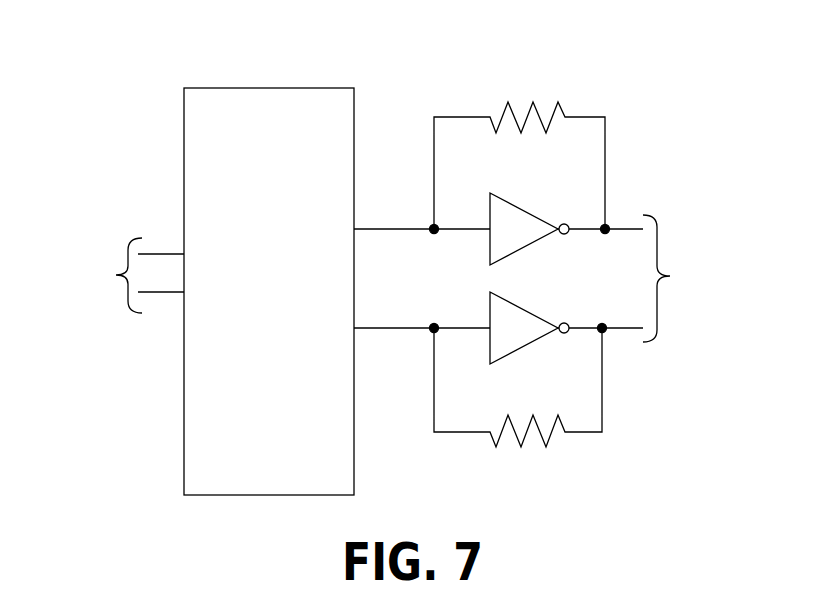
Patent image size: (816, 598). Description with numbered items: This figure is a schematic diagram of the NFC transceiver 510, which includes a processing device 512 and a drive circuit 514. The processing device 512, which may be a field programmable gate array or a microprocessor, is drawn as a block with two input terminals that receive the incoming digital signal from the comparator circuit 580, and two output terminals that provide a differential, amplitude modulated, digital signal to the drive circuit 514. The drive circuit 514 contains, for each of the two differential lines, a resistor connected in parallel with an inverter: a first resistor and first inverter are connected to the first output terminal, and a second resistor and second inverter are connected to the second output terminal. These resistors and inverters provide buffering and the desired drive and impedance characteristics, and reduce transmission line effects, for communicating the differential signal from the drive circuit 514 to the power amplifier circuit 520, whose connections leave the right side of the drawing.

The NFC transceiver 510 is at (338, 36).
The processing device 512 is at (222, 86).
The drive circuit 514 is at (640, 67).
The comparator circuit 580 is at (109, 273).
The power amplifier circuit 520 is at (696, 278).